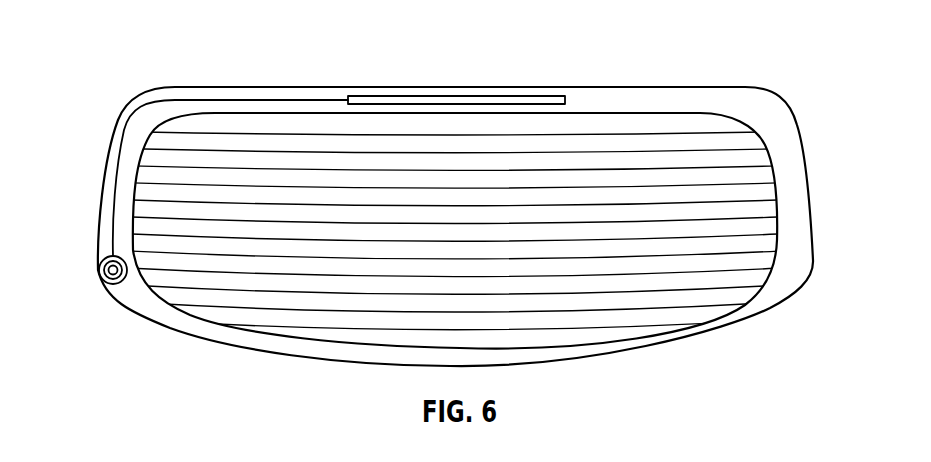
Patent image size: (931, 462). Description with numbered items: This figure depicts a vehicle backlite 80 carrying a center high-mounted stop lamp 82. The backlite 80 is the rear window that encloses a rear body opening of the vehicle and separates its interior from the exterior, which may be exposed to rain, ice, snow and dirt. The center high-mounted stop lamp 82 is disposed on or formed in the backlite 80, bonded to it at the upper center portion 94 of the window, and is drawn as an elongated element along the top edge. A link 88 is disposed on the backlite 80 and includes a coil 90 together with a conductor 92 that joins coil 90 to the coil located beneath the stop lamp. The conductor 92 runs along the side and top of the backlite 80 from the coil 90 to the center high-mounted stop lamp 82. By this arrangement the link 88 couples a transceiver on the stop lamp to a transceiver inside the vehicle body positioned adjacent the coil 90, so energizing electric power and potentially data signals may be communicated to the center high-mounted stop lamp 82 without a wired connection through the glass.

The backlite 80 is at (792, 123).
The center high-mounted stop lamp 82 is at (567, 100).
The link 88 is at (104, 188).
The coil 90 is at (100, 281).
The conductor 92 is at (116, 224).
The upper center portion 94 is at (467, 95).